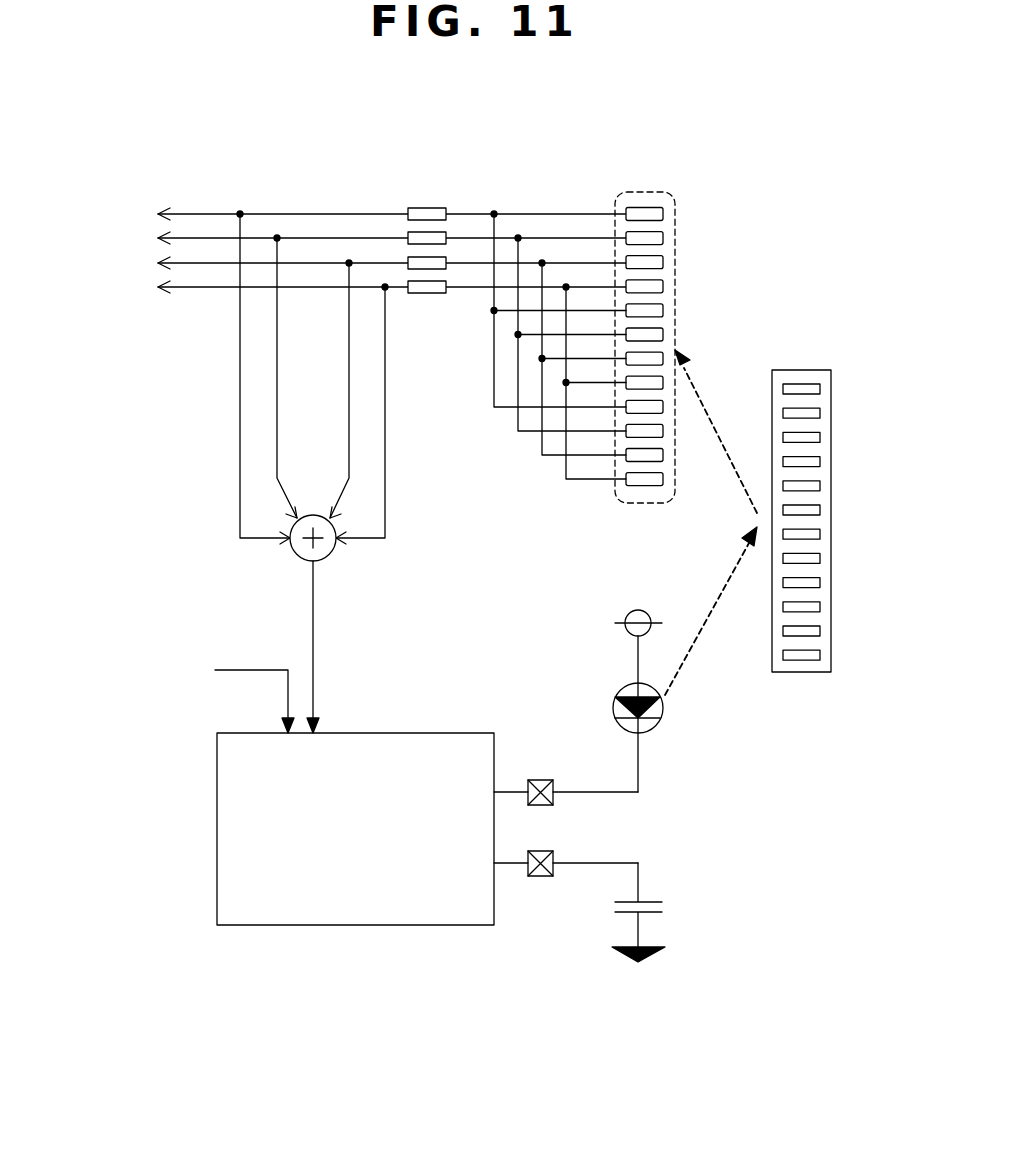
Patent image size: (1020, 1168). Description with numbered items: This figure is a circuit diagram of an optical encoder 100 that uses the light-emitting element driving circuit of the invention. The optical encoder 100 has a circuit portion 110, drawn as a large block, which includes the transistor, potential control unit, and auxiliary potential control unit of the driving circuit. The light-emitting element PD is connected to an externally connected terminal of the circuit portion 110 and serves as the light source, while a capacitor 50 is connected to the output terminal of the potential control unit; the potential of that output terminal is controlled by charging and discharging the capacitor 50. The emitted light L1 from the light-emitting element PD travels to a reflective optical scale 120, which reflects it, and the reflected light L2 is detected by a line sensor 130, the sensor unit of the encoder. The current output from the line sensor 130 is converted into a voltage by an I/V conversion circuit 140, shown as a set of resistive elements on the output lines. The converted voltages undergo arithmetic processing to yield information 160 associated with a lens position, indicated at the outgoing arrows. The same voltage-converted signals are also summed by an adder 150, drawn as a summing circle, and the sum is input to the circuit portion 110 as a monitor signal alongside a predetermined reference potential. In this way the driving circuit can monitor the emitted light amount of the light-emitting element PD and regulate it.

The optical encoder 100 is at (722, 118).
The circuit portion 110 is at (300, 926).
The reflective optical scale 120 is at (801, 370).
The line sensor 130 is at (646, 192).
The I/V conversion circuit 140 is at (412, 208).
The adder 150 is at (338, 556).
The information associated with a lens position 160 is at (137, 197).
The capacitor 50 is at (663, 907).
The light-emitting element PD is at (615, 700).
The emitted light L1 is at (712, 628).
The reflected light L2 is at (700, 392).